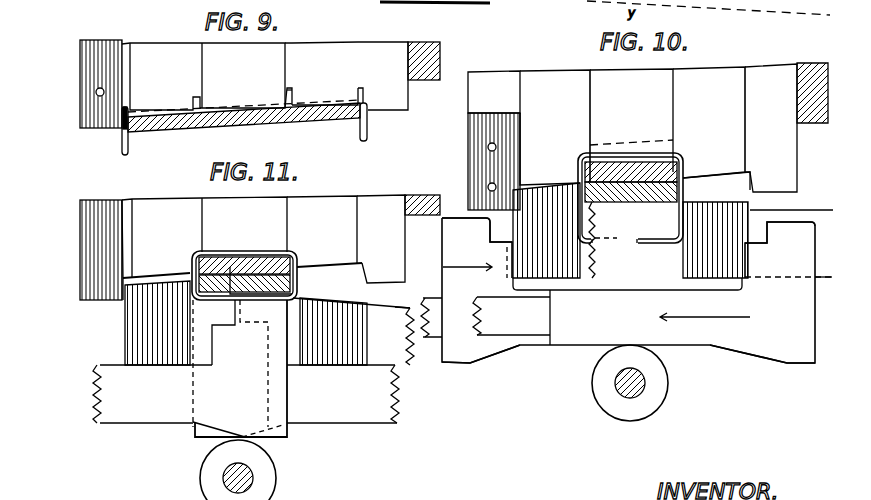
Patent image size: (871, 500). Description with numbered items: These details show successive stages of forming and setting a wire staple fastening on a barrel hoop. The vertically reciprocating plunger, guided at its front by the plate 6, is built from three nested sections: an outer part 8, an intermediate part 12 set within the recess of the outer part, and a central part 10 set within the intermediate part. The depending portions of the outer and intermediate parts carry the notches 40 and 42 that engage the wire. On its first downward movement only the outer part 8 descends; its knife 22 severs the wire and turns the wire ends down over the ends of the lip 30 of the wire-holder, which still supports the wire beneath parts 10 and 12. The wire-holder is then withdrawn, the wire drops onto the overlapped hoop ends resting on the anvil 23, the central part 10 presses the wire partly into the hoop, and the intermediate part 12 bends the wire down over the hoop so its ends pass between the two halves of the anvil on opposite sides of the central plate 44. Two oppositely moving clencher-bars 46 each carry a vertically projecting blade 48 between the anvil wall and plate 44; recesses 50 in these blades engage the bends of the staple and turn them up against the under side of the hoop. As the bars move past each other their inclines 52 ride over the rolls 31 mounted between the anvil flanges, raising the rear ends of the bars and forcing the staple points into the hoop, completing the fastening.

In FIG. 9, the plate 6 is at (440, 47).
In FIG. 10, the plate 6 is at (815, 120).
In FIG. 11, the plate 6 is at (422, 205).
In FIG. 9, the outer part of the plunger 8 is at (383, 76).
In FIG. 10, the outer part of the plunger 8 is at (632, 128).
In FIG. 11, the outer part of the plunger 8 is at (381, 239).
In FIG. 9, the central part of the plunger 10 is at (246, 75).
In FIG. 10, the central part of the plunger 10 is at (631, 120).
In FIG. 11, the central part of the plunger 10 is at (244, 224).
In FIG. 9, the intermediate part of the plunger 12 is at (240, 76).
In FIG. 10, the intermediate part of the plunger 12 is at (632, 126).
In FIG. 11, the intermediate part of the plunger 12 is at (239, 237).
In FIG. 9, the knife 22 is at (101, 115).
In FIG. 10, the knife 22 is at (468, 162).
In FIG. 11, the knife 22 is at (96, 298).
In FIG. 10, the anvil 23 is at (713, 216).
In FIG. 11, the anvil 23 is at (320, 312).
In FIG. 9, the lip 30 is at (205, 128).
In FIG. 10, the rolls 31 is at (668, 407).
In FIG. 11, the rolls 31 is at (278, 478).
In FIG. 9, the notch 40 is at (130, 110).
In FIG. 9, the notch 42 is at (292, 95).
In FIG. 10, the central plate 44 is at (630, 199).
In FIG. 11, the central plate 44 is at (242, 298).
In FIG. 10, the clencher-bars 46 is at (423, 298).
In FIG. 11, the clencher-bars 46 is at (246, 394).
In FIG. 10, the blade 48 is at (637, 290).
In FIG. 11, the blade 48 is at (240, 368).
In FIG. 10, the recesses 50 is at (490, 238).
In FIG. 10, the inclines 52 is at (496, 356).